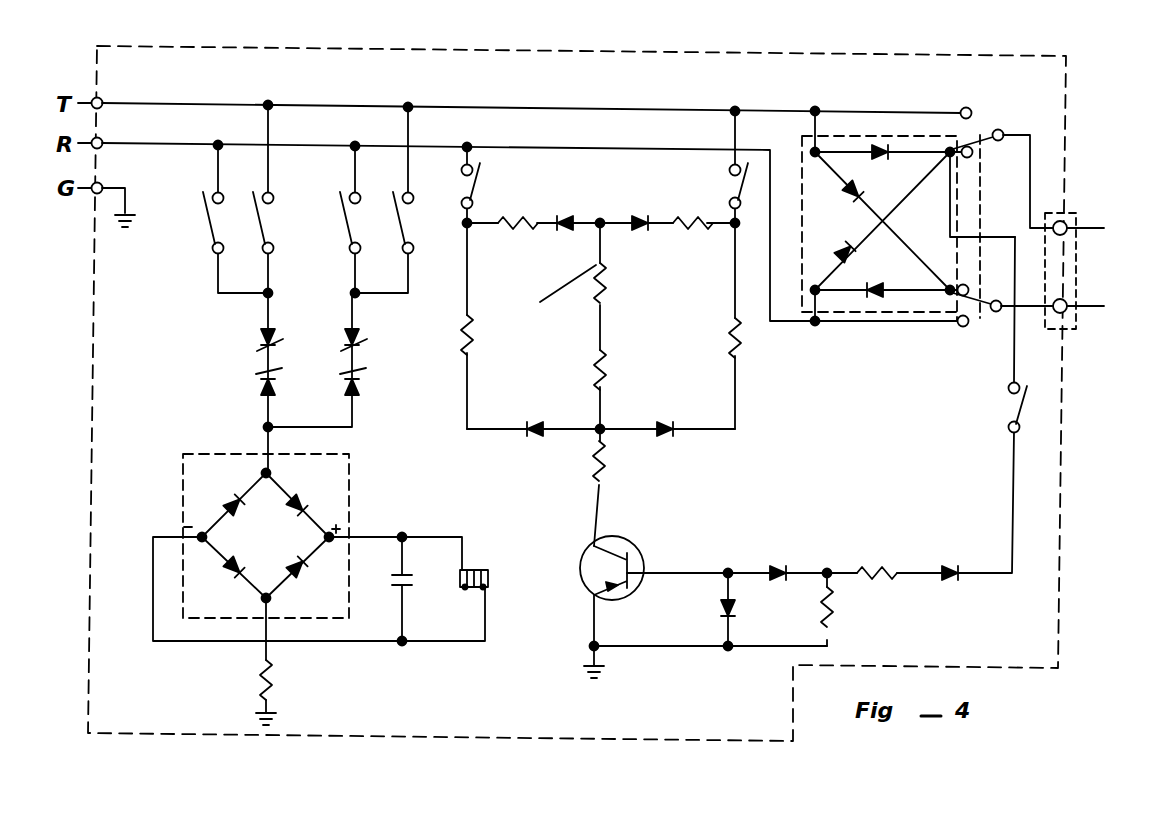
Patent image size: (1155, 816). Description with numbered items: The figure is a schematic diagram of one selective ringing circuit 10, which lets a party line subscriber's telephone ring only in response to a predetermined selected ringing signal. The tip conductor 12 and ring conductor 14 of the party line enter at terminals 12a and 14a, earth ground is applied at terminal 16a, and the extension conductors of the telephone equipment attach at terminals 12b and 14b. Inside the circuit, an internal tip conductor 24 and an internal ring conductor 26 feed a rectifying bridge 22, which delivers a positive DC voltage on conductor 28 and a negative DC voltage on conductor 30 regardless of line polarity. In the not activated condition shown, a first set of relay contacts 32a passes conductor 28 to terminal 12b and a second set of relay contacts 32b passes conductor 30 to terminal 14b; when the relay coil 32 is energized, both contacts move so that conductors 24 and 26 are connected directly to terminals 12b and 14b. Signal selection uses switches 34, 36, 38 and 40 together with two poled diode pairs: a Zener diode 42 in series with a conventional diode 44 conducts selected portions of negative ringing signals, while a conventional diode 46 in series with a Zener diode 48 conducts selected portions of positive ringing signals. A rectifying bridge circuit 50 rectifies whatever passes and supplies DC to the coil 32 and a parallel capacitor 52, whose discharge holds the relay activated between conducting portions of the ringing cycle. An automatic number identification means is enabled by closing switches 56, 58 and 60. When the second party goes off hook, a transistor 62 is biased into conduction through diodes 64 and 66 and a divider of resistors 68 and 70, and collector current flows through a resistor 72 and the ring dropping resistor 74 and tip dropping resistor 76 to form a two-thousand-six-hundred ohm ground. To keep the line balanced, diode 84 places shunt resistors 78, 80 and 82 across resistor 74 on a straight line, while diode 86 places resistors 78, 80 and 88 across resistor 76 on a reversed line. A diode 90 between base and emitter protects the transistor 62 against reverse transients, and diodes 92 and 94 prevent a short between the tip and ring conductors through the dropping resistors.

The selective ringing circuit 10 is at (674, 68).
The tip conductor 12 is at (90, 101).
The terminal 12a is at (116, 104).
The terminal 12b is at (1066, 218).
The ring conductor 14 is at (90, 143).
The terminal 14a is at (116, 144).
The terminal 14b is at (1067, 314).
The terminal 16a is at (117, 189).
The rectifying bridge 22 is at (877, 134).
The internal tip conductor 24 is at (578, 106).
The internal ring conductor 26 is at (559, 148).
The conductor 28 is at (1029, 164).
The conductor 30 is at (1026, 308).
The relay coil 32 is at (470, 568).
The first set of relay contacts 32a is at (1024, 102).
The second set of relay contacts 32b is at (980, 315).
The switch 34 is at (206, 226).
The switch 36 is at (264, 228).
The switch 38 is at (344, 226).
The switch 40 is at (405, 228).
The Zener diode 42 is at (262, 336).
The conventional diode 44 is at (258, 390).
The conventional diode 46 is at (358, 338).
The Zener diode 48 is at (358, 383).
The rectifying bridge circuit 50 is at (181, 466).
The capacitor 52 is at (410, 587).
The switch 56 is at (472, 199).
The switch 58 is at (738, 190).
The switch 60 is at (1010, 409).
The transistor 62 is at (626, 548).
The diode 64 is at (778, 560).
The diode 66 is at (961, 534).
The resistor 68 is at (830, 624).
The resistor 70 is at (874, 564).
The resistor 72 is at (595, 463).
The ring dropping resistor 74 is at (475, 332).
The tip dropping resistor 76 is at (724, 340).
The resistor 78 is at (606, 360).
The resistor 80 is at (568, 292).
The resistor 82 is at (520, 228).
The diode 84 is at (572, 232).
The diode 86 is at (635, 232).
The resistor 88 is at (710, 230).
The diode 90 is at (718, 608).
The diode 92 is at (537, 439).
The diode 94 is at (663, 438).